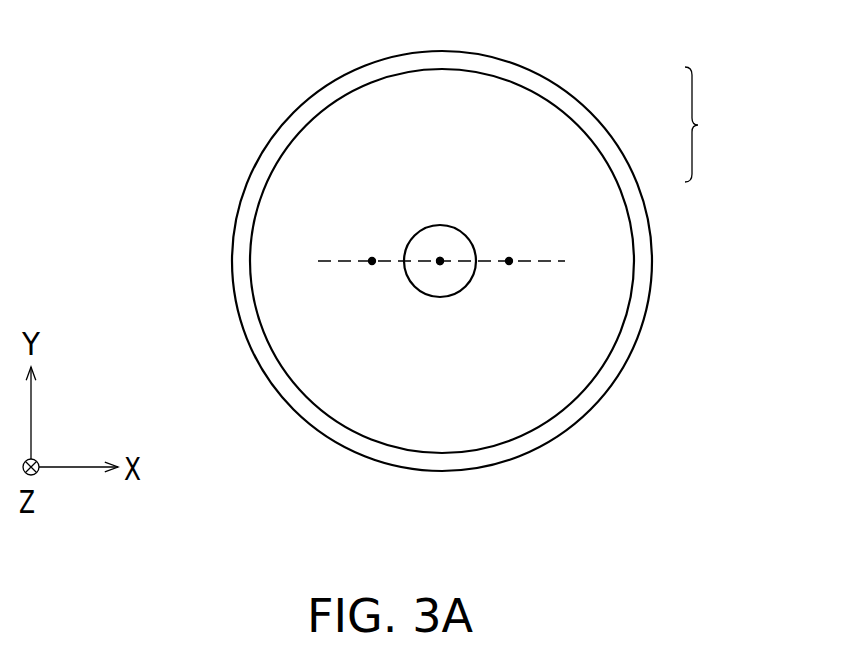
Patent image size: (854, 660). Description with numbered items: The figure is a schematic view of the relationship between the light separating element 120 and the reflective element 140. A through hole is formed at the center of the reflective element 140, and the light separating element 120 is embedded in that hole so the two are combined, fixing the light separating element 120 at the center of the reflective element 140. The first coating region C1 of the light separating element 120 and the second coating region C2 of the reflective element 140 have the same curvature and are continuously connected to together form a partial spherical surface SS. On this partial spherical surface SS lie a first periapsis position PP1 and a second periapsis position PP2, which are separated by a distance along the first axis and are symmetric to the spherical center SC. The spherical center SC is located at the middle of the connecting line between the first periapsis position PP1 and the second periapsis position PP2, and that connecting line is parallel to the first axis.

The light separating element 120 is at (432, 243).
The reflective element 140 is at (587, 395).
The first coating region C1 is at (448, 256).
The second coating region C2 is at (560, 218).
The partial spherical surface SS is at (710, 124).
The spherical center SC is at (441, 268).
The first periapsis position PP1 is at (368, 268).
The second periapsis position PP2 is at (512, 268).